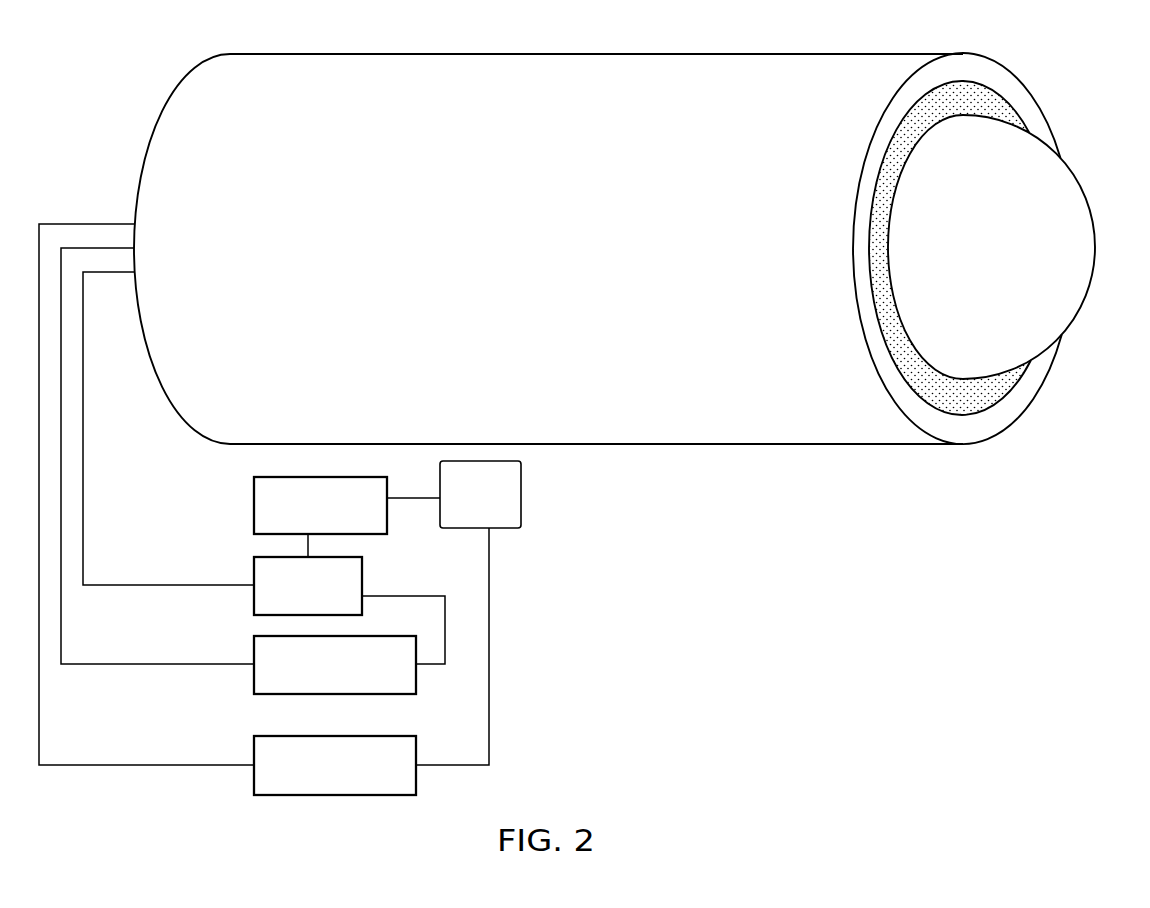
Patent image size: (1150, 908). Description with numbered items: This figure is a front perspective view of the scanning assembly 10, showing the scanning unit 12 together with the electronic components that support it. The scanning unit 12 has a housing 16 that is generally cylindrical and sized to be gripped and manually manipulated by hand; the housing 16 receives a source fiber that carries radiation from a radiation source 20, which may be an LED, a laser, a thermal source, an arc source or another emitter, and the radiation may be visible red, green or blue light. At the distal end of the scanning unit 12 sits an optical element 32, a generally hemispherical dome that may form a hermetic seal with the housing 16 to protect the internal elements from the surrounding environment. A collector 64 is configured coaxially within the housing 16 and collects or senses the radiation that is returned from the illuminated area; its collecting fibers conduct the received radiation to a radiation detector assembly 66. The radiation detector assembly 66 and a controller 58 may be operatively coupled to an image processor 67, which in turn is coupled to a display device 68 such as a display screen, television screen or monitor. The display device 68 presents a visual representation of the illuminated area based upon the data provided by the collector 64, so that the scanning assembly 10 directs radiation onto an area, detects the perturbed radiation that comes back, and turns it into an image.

The scanning assembly 10 is at (585, 404).
The scanning unit 12 is at (649, 62).
The housing 16 is at (743, 62).
The radiation source 20 is at (254, 648).
The optical element 32 is at (1080, 203).
The controller 58 is at (254, 571).
The collector 64 is at (1000, 104).
The radiation detector assembly 66 is at (254, 752).
The image processor 67 is at (525, 490).
The display device 68 is at (254, 500).